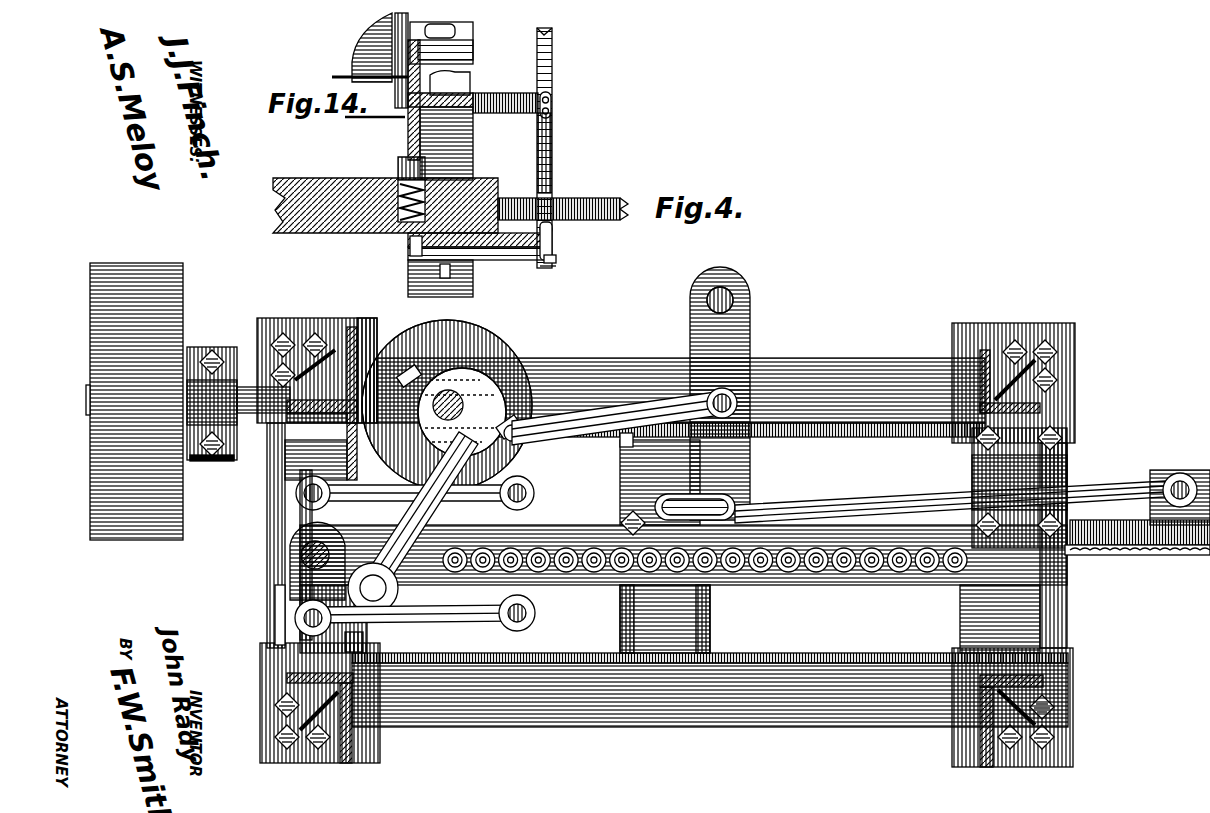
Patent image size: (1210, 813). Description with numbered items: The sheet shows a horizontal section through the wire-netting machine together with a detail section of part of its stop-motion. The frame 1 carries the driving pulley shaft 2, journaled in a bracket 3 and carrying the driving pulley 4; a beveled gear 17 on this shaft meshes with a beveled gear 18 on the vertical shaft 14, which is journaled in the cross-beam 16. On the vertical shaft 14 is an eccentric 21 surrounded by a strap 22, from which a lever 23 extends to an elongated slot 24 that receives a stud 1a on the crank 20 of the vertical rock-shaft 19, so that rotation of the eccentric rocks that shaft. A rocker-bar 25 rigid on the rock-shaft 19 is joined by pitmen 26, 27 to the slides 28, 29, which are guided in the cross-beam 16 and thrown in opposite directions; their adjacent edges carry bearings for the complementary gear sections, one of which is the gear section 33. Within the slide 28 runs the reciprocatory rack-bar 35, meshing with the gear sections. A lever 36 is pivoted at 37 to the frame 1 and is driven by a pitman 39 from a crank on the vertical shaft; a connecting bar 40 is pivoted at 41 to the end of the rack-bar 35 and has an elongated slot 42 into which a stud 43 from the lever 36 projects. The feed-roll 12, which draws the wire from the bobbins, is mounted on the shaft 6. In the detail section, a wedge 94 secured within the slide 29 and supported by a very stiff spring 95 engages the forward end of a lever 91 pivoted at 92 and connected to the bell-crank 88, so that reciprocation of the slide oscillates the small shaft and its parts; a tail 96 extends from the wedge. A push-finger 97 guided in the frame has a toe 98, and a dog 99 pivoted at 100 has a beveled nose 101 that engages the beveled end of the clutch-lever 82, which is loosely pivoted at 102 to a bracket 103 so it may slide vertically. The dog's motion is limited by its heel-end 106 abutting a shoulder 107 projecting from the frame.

In FIG. 14, the frame 1 is at (474, 148).
In FIG. 4, the frame 1 is at (287, 320).
In FIG. 4, the stud 1a is at (373, 588).
In FIG. 4, the driving pulley shaft 2 is at (260, 425).
In FIG. 4, the bracket 3 is at (220, 462).
In FIG. 4, the driving pulley 4 is at (92, 428).
In FIG. 14, the shaft 6 is at (433, 54).
In FIG. 14, the feed-roll 12 is at (356, 50).
In FIG. 4, the vertical shaft 14 is at (462, 392).
In FIG. 4, the cross-beam 16 is at (840, 372).
In FIG. 4, the beveled gear 17 is at (360, 448).
In FIG. 4, the beveled gear 18 is at (495, 348).
In FIG. 4, the vertical rock-shaft 19 is at (300, 560).
In FIG. 4, the crank 20 is at (280, 612).
In FIG. 4, the eccentric 21 is at (478, 398).
In FIG. 4, the strap 22 is at (514, 380).
In FIG. 4, the lever 23 is at (420, 512).
In FIG. 4, the elongated slot 24 is at (370, 630).
In FIG. 4, the rocker-bar 25 is at (300, 535).
In FIG. 4, the pitman 26 is at (415, 493).
In FIG. 4, the pitman 27 is at (430, 612).
In FIG. 4, the slide 28 is at (568, 526).
In FIG. 14, the slide 29 is at (392, 230).
In FIG. 4, the slide 29 is at (585, 578).
In FIG. 4, the gear section 33 is at (402, 450).
In FIG. 14, the rack-bar 35 is at (510, 198).
In FIG. 4, the rack-bar 35 is at (1100, 540).
In FIG. 4, the lever 36 is at (720, 393).
In FIG. 4, the pivot 37 is at (725, 297).
In FIG. 4, the pitman 39 is at (592, 440).
In FIG. 4, the connecting bar 40 is at (835, 507).
In FIG. 4, the pivot 41 is at (1180, 474).
In FIG. 4, the elongated slot 42 is at (695, 507).
In FIG. 4, the stud 43 is at (727, 500).
In FIG. 14, the clutch-lever 82 is at (553, 45).
In FIG. 14, the bell-crank 88 is at (462, 72).
In FIG. 14, the lever 91 is at (410, 135).
In FIG. 14, the pivot 92 is at (400, 118).
In FIG. 14, the wedge 94 is at (398, 165).
In FIG. 14, the spring 95 is at (400, 198).
In FIG. 14, the tail 96 is at (412, 242).
In FIG. 14, the push-finger 97 is at (500, 262).
In FIG. 14, the toe 98 is at (410, 255).
In FIG. 14, the dog 99 is at (552, 229).
In FIG. 14, the pivot 100 is at (553, 235).
In FIG. 14, the beveled nose 101 is at (552, 186).
In FIG. 14, the pivot 102 is at (552, 100).
In FIG. 14, the bracket 103 is at (552, 114).
In FIG. 14, the heel-end 106 is at (556, 260).
In FIG. 14, the shoulder 107 is at (550, 268).